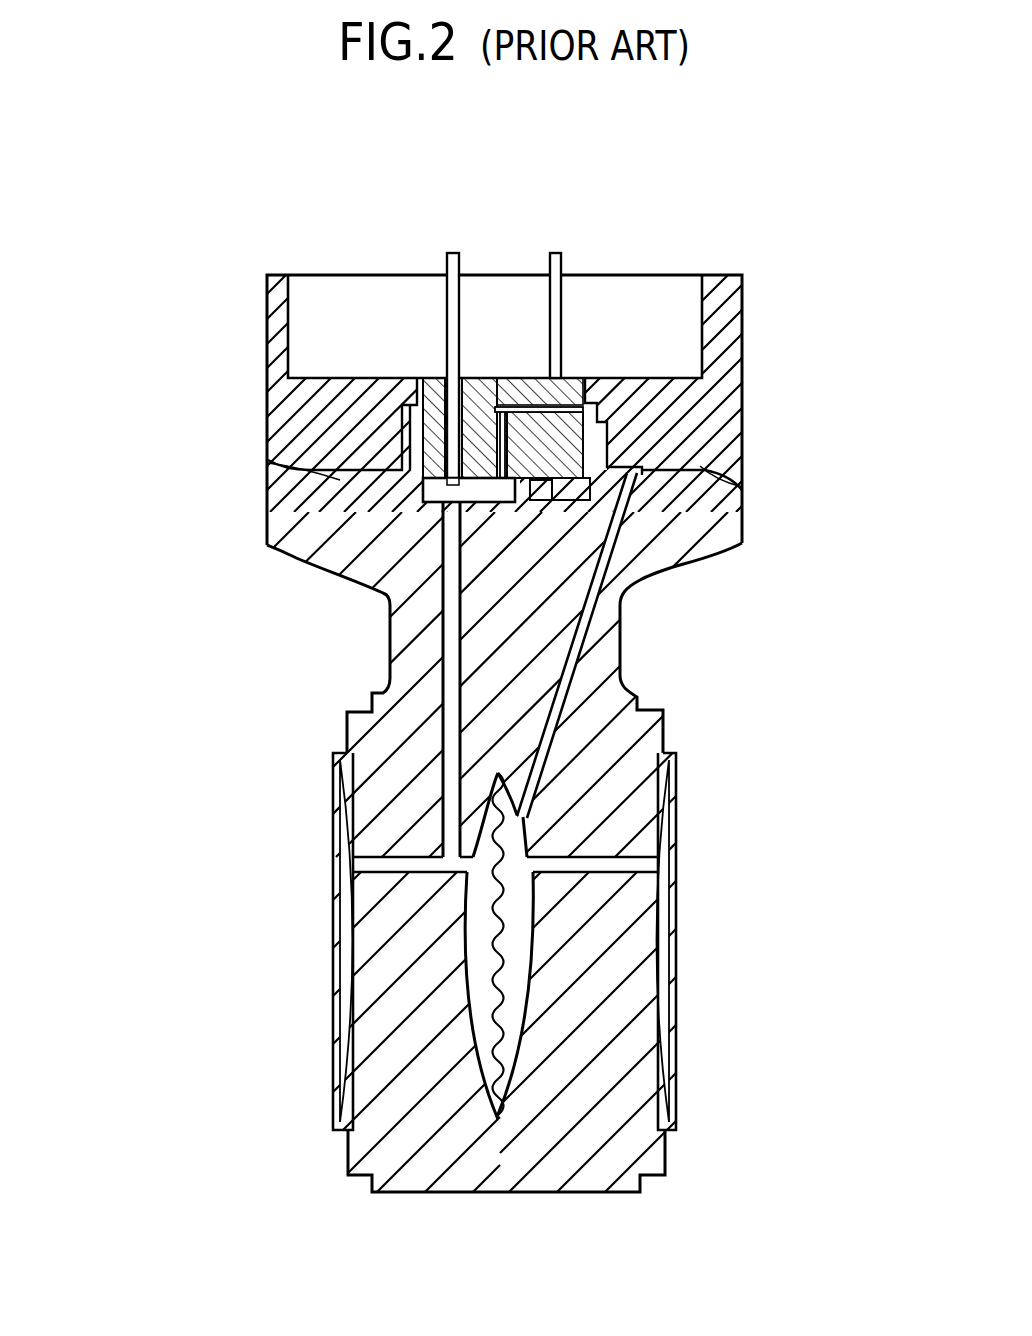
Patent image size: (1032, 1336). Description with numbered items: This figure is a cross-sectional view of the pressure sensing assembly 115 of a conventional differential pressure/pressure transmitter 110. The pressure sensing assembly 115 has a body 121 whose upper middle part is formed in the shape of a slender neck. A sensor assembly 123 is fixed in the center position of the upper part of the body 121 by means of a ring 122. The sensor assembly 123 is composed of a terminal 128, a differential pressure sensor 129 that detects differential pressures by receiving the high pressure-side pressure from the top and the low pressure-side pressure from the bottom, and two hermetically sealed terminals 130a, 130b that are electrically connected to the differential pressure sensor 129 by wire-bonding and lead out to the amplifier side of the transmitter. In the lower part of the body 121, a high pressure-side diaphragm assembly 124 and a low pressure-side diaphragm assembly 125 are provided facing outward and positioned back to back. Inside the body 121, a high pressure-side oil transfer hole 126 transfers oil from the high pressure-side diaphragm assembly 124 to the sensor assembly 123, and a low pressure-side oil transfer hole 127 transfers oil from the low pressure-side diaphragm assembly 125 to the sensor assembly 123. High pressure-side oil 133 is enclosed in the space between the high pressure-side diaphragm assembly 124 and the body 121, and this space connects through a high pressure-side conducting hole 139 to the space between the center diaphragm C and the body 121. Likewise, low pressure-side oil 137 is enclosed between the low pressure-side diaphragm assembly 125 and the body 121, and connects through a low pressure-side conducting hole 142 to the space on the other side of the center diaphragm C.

The differential pressure/pressure transmitter 110 is at (158, 205).
The pressure sensing assembly 115 is at (727, 265).
The body 121 is at (650, 628).
The ring 122 is at (722, 366).
The sensor assembly 123 is at (757, 437).
The high pressure-side diaphragm assembly 124 is at (340, 1025).
The low pressure-side diaphragm assembly 125 is at (668, 1025).
The high pressure-side oil transfer hole 126 is at (453, 643).
The low pressure-side oil transfer hole 127 is at (567, 678).
The terminal 128 is at (513, 386).
The differential pressure sensor 129 is at (520, 496).
The hermetically sealed terminal 130a is at (450, 253).
The hermetically sealed terminal 130b is at (556, 253).
The high pressure-side oil 133 is at (340, 945).
The low pressure-side oil 137 is at (668, 945).
The high pressure-side conducting hole 139 is at (366, 865).
The low pressure-side conducting hole 142 is at (648, 865).
The center diaphragm C is at (487, 1063).